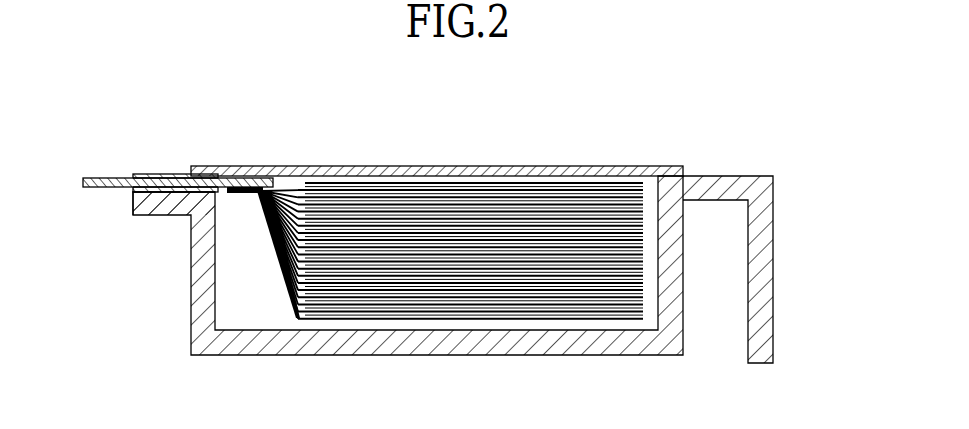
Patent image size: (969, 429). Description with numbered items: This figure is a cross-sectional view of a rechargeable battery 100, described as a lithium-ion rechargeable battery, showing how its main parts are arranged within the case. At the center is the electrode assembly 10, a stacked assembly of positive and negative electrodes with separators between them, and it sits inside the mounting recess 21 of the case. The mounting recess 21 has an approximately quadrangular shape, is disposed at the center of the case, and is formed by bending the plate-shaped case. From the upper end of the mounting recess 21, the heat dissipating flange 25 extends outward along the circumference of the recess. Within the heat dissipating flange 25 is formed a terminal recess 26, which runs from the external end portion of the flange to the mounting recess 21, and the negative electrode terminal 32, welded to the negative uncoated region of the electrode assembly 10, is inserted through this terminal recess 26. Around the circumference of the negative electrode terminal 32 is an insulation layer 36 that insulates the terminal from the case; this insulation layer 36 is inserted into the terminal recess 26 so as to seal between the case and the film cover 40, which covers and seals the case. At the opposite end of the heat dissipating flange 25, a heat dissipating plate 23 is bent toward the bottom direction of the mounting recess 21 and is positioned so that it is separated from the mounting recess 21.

The rechargeable battery 100 is at (383, 105).
The electrode assembly 10 is at (473, 326).
The mounting recess 21 is at (272, 327).
The heat dissipating plate 23 is at (762, 283).
The heat dissipating flange 25 is at (158, 202).
The terminal recess 26 is at (127, 187).
The negative electrode terminal 32 is at (150, 177).
The insulation layer 36 is at (175, 176).
The film cover 40 is at (568, 166).